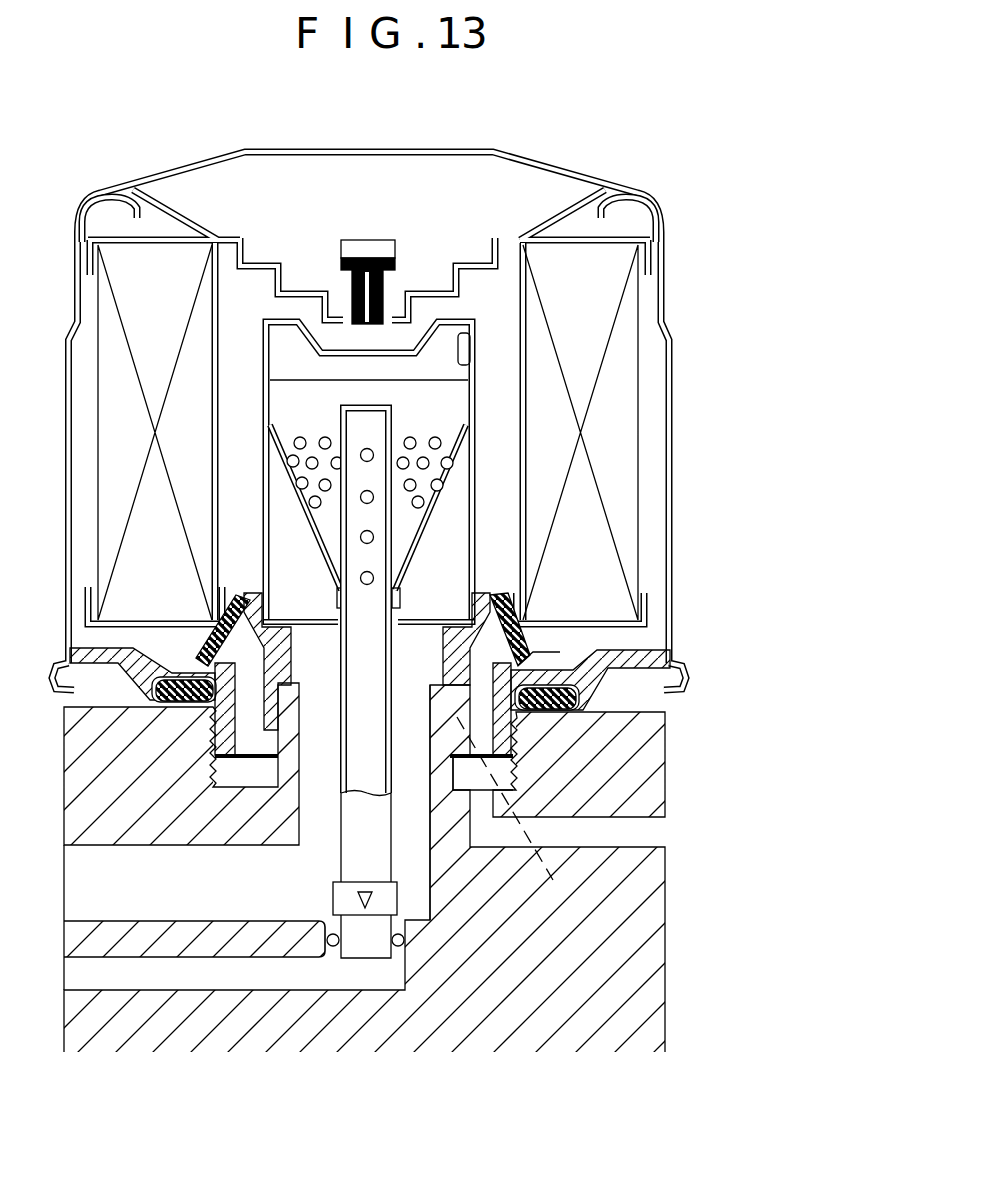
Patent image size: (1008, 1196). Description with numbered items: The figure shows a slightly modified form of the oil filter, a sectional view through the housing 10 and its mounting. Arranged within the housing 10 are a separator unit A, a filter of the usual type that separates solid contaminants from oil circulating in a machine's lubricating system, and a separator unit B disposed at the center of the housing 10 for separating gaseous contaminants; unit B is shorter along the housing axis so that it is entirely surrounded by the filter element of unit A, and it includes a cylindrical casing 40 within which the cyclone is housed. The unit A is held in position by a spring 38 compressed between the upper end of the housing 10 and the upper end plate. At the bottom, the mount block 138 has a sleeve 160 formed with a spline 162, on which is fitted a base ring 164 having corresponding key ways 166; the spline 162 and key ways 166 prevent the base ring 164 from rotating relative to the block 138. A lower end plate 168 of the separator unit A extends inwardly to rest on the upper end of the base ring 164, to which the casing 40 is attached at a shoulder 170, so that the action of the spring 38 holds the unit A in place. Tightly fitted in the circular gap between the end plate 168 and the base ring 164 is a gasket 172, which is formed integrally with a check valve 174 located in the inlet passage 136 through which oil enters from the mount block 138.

The housing 10 is at (567, 178).
The spring 38 is at (583, 198).
The cylindrical casing 40 is at (473, 430).
The separator unit A is at (639, 435).
The separator unit B is at (476, 456).
The inlet passage 136 is at (517, 860).
The mount block 138 is at (612, 992).
The sleeve 160 is at (443, 830).
The spline 162 is at (440, 730).
The base ring 164 is at (450, 650).
The key ways 166 is at (527, 814).
The lower end plate 168 is at (603, 632).
The shoulder 170 is at (453, 607).
The gasket 172 is at (487, 592).
The check valve 174 is at (533, 652).